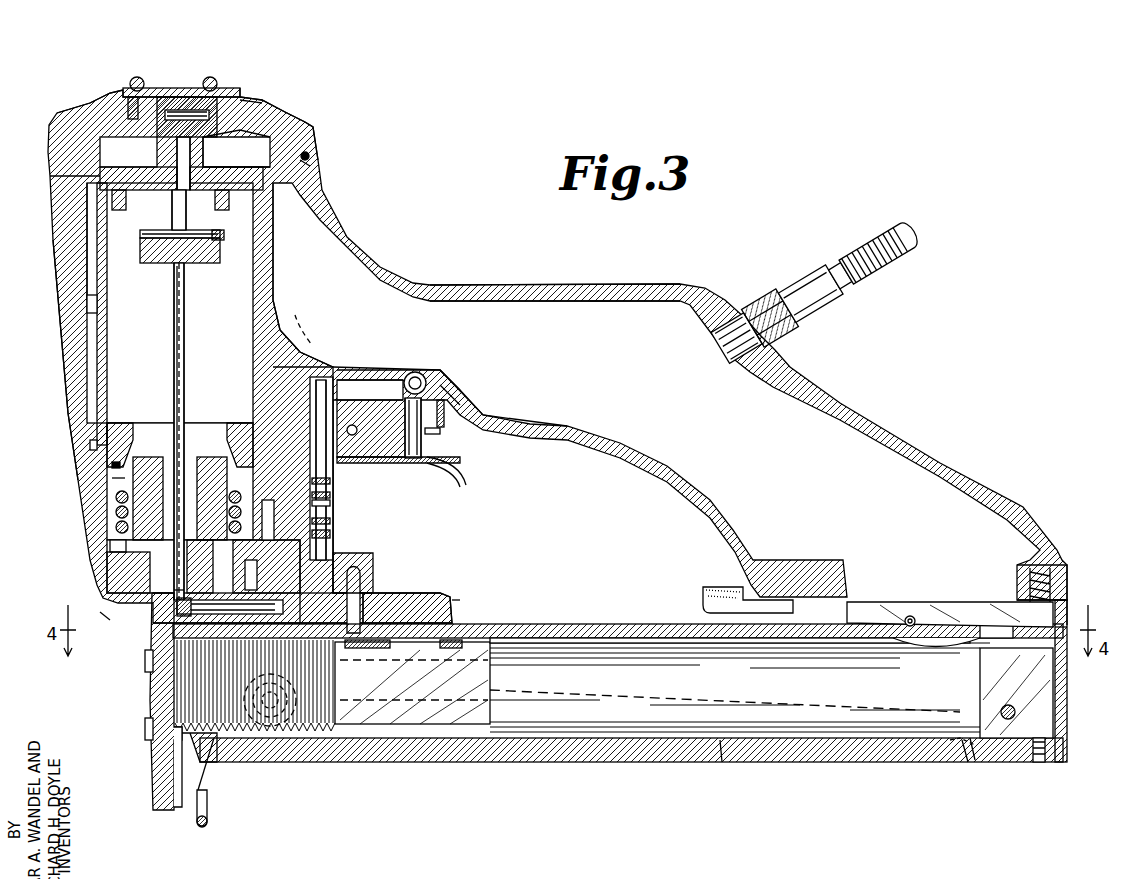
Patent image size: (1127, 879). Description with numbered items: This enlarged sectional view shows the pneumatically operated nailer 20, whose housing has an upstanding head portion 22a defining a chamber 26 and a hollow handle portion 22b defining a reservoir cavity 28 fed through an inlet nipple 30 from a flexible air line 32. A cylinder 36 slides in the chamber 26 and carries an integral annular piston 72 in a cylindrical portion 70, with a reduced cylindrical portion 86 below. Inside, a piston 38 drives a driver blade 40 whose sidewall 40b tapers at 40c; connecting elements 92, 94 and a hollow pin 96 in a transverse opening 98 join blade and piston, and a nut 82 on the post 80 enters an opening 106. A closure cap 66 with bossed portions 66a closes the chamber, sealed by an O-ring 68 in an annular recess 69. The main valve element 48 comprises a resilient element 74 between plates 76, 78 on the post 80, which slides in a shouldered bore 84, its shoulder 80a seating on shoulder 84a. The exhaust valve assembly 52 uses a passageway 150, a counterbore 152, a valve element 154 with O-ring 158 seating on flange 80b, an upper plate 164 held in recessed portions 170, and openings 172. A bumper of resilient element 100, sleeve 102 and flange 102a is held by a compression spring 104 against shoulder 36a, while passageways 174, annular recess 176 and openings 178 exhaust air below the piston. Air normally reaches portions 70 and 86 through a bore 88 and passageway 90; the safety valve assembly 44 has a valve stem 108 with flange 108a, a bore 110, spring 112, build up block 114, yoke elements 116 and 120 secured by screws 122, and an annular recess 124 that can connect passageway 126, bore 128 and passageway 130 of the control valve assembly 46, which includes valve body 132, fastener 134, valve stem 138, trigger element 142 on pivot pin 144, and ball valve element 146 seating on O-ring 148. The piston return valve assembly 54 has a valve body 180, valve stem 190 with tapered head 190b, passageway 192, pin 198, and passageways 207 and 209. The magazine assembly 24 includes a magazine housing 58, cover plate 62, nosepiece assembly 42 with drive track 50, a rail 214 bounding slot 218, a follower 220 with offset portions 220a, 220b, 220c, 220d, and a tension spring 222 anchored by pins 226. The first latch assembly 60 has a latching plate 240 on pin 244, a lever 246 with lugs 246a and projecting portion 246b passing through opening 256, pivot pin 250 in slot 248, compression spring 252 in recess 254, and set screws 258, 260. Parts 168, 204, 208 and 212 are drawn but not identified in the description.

The pneumatically operated nailer 20 is at (455, 144).
The head portion 22a is at (62, 195).
The handle portion 22b is at (655, 285).
The magazine assembly 24 is at (486, 798).
The chamber 26 is at (60, 246).
The cavity 28 is at (600, 300).
The inlet nipple 30 is at (820, 312).
The flexible air line 32 is at (872, 248).
The cylinder 36 is at (97, 288).
The shoulder 36a is at (112, 480).
The piston 38 is at (140, 236).
The driver blade 40 is at (173, 368).
The sidewall 40b is at (185, 372).
The tapered lower end 40c is at (245, 600).
The nosepiece assembly 42 is at (134, 695).
The safety valve assembly 44 is at (419, 484).
The control valve assembly 46 is at (477, 456).
The main valve element 48 is at (261, 167).
The drive track 50 is at (176, 778).
The exhaust valve assembly 52 is at (217, 82).
The piston return valve assembly 54 is at (104, 621).
The magazine housing 58 is at (600, 632).
The first latch assembly 60 is at (1092, 614).
The magazine cover plate 62 is at (545, 626).
The closure cap 66 is at (306, 124).
The upstanding portions 66a is at (118, 95).
The sealing O-ring 68 is at (310, 156).
The annular recess 69 is at (310, 165).
The cylindrical portion 70 is at (276, 297).
The annular piston 72 is at (88, 304).
The resilient element 74 is at (60, 176).
The upper metal plate 76 is at (122, 167).
The lower metal plate 78 is at (122, 193).
The supporting post 80 is at (150, 167).
The shouldered portion 80a is at (218, 125).
The inwardly extending flange 80b is at (172, 100).
The nut 82 is at (216, 192).
The shouldered bore 84 is at (245, 105).
The shoulder 84a is at (278, 123).
The reduced diameter cylindrical portion 86 is at (92, 443).
The bore 88 is at (290, 390).
The passageway 90 is at (300, 368).
The connecting element 92 is at (173, 276).
The connecting element 94 is at (186, 276).
The hollow pin 96 is at (148, 252).
The transverse opening 98 is at (224, 238).
The resilient element 100 is at (200, 457).
The metal sleeve 102 is at (113, 537).
The annular flange 102a is at (110, 548).
The compression spring 104 is at (116, 494).
The opening 106 is at (105, 217).
The valve stem 108 is at (332, 481).
The annular flange 108a is at (372, 590).
The shouldered bore 110 is at (350, 560).
The compression spring 112 is at (332, 536).
The build up block 114 is at (452, 604).
The yoke element 116 is at (209, 816).
The second yoke element 120 is at (332, 505).
The machine screws 122 is at (332, 496).
The annular recess 124 is at (333, 414).
The passageway 126 is at (408, 372).
The bore 128 is at (430, 378).
The passageway 130 is at (350, 380).
The flanged valve body 132 is at (405, 441).
The headed fastener 134 is at (447, 443).
The valve stem 138 is at (428, 460).
The trigger element 142 is at (448, 486).
The pivot pin 144 is at (350, 445).
The ball valve element 146 is at (448, 380).
The resilient O-ring 148 is at (458, 388).
The axially extending passageway 150 is at (212, 140).
The counterbore 152 is at (170, 128).
The exhaust valve element 154 is at (228, 87).
The resilient O-ring 158 is at (192, 110).
The upper metal plate 164 is at (256, 90).
The screw 168 is at (140, 77).
The recessed portions 170 is at (132, 97).
The openings 172 is at (255, 98).
The passageways 174 is at (130, 450).
The annular recess 176 is at (112, 466).
The openings 178 is at (100, 512).
The valve body 180 is at (182, 630).
The valve stem 190 is at (177, 620).
The tapered valve head 190b is at (325, 615).
The passageway 192 is at (298, 322).
The pin 198 is at (165, 593).
The nose plate 204 is at (152, 708).
The passageway 207 is at (252, 577).
The nose slot 208 is at (208, 766).
The passageway 209 is at (268, 520).
The stud 212 is at (146, 662).
The rail 214 is at (660, 630).
The slot 218 is at (615, 640).
The follower element 220 is at (492, 692).
The offset portion 220a is at (358, 650).
The offset portion 220b is at (447, 650).
The offset portion 220c is at (407, 608).
The offset portion 220d is at (492, 624).
The tension spring 222 is at (721, 752).
The pins 226 is at (975, 768).
The latching plate 240 is at (1046, 686).
The pin 244 is at (1015, 712).
The lever 246 is at (938, 612).
The projecting lugs 246a is at (718, 600).
The projecting portion 246b is at (975, 660).
The slot 248 is at (1064, 597).
The pivot pin 250 is at (915, 616).
The compression spring 252 is at (1042, 568).
The recess 254 is at (1065, 582).
The opening 256 is at (1070, 632).
The set screw 258 is at (1042, 764).
The locking screw 260 is at (993, 669).